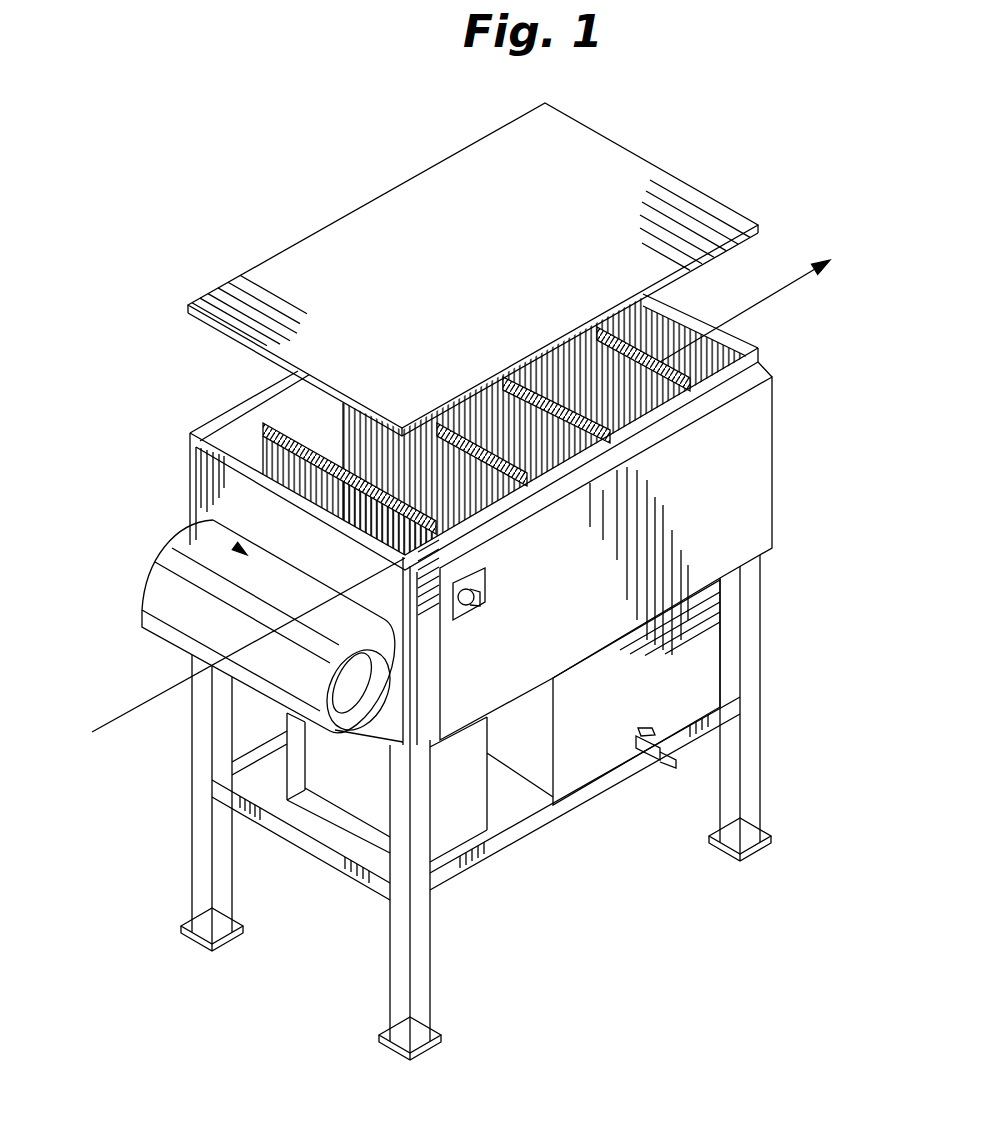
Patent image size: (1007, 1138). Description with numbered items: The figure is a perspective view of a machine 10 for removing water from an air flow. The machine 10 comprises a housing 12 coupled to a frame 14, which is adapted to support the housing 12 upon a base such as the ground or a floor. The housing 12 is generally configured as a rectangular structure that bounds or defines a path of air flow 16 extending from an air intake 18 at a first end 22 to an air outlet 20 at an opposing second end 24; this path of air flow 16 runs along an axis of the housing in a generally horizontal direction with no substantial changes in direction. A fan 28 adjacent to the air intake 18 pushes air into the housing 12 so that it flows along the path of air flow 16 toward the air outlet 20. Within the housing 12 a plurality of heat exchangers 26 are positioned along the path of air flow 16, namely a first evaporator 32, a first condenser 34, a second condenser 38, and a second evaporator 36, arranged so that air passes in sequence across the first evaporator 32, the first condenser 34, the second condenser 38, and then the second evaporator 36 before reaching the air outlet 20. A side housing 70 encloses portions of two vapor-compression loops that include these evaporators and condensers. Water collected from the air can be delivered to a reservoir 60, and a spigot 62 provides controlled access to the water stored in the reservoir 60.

The machine 10 is at (455, 566).
The housing 12 is at (470, 468).
The frame 14 is at (516, 807).
The path of air flow 16 is at (454, 502).
The air intake 18 is at (170, 526).
The air outlet 20 is at (528, 269).
The first end 22 is at (239, 583).
The second end 24 is at (527, 367).
The heat exchangers 26 is at (465, 373).
The fan 28 is at (228, 630).
The first evaporator 32 is at (255, 426).
The first condenser 34 is at (524, 546).
The second evaporator 36 is at (635, 495).
The second condenser 38 is at (652, 521).
The reservoir 60 is at (636, 742).
The spigot 62 is at (674, 798).
The side housing 70 is at (646, 558).